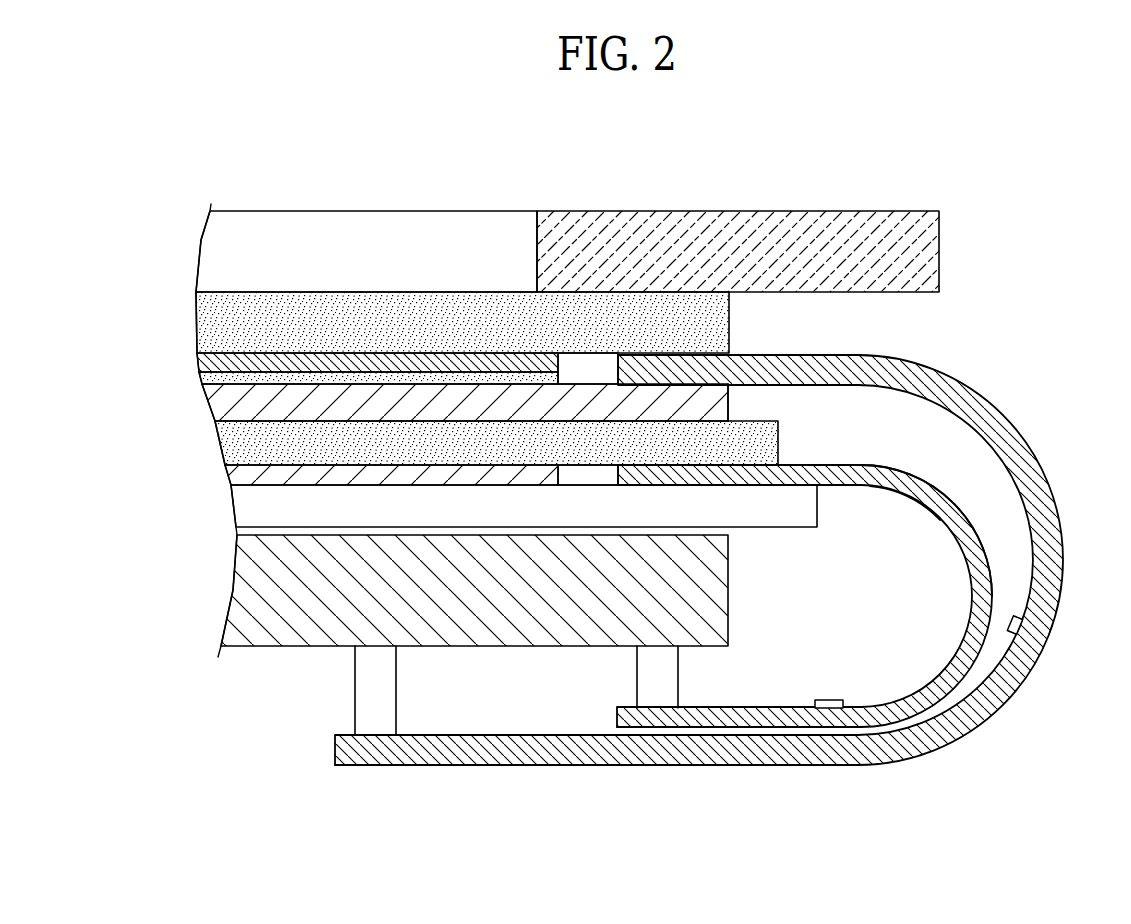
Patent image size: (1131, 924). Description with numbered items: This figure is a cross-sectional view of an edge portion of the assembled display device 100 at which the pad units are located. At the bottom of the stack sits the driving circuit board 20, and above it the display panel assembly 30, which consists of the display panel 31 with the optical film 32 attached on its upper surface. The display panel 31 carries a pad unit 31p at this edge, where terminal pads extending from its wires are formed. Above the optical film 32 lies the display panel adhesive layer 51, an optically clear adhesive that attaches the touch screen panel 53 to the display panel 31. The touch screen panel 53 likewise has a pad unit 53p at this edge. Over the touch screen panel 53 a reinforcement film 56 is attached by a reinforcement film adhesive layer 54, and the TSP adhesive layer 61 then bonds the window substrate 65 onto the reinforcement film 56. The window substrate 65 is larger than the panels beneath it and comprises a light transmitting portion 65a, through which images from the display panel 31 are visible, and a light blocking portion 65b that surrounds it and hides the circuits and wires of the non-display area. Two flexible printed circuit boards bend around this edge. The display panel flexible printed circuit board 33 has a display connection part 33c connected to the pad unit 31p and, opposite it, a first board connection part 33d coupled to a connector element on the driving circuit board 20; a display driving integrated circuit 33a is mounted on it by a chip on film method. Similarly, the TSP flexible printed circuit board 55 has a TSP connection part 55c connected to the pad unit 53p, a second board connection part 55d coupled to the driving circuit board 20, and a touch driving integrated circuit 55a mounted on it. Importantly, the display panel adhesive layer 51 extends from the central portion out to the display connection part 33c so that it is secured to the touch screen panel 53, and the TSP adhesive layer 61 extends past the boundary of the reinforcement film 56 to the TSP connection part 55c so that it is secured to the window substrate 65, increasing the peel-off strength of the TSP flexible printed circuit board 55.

The display device 100 is at (733, 163).
The window substrate 65 is at (575, 169).
The light transmitting portion 65a is at (493, 242).
The light blocking portion 65b is at (577, 240).
The TSP adhesive layer 61 is at (218, 315).
The reinforcement film 56 is at (220, 360).
The reinforcement film adhesive layer 54 is at (200, 377).
The touch screen panel 53 is at (232, 398).
The pad unit 53p is at (763, 385).
The display panel adhesive layer 51 is at (242, 440).
The display panel assembly 30 is at (180, 467).
The optical film 32 is at (250, 472).
The display panel 31 is at (252, 507).
The pad unit 31p is at (737, 485).
The driving circuit board 20 is at (260, 582).
The TSP flexible printed circuit board 55 is at (1050, 576).
The touch driving integrated circuit 55a is at (1023, 627).
The TSP connection part 55c is at (686, 354).
The second board connection part 55d is at (345, 750).
The display panel flexible printed circuit board 33 is at (973, 590).
The display driving integrated circuit 33a is at (829, 698).
The display connection part 33c is at (733, 463).
The first board connection part 33d is at (728, 737).